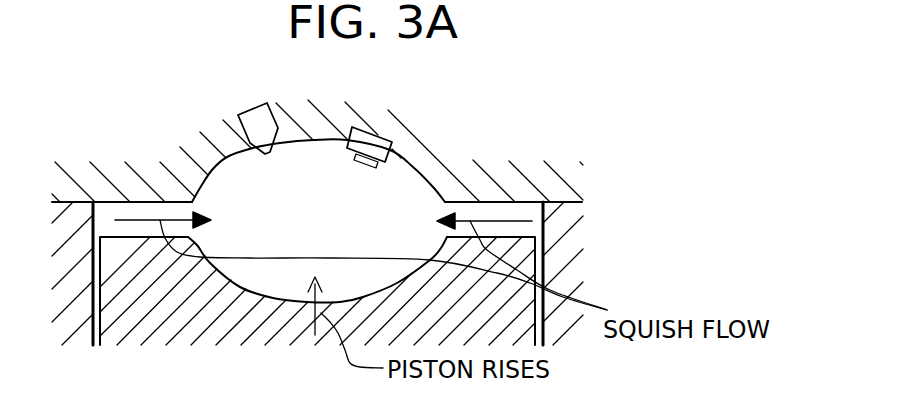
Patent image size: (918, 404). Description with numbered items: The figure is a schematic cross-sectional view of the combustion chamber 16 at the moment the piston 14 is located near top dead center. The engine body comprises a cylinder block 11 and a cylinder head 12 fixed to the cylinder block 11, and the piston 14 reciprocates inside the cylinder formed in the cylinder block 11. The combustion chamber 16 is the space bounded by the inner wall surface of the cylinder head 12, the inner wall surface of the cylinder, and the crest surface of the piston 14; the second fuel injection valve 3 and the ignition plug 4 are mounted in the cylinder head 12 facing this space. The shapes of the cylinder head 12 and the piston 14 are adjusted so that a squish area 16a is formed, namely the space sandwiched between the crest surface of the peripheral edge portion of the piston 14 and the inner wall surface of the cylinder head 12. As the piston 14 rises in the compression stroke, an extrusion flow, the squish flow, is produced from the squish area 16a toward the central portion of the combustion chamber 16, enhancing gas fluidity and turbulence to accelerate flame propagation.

The second fuel injection valve 3 is at (247, 113).
The ignition plug 4 is at (363, 125).
The cylinder block 11 is at (563, 252).
The cylinder head 12 is at (467, 176).
The piston 14 is at (138, 312).
The combustion chamber 16 is at (331, 226).
The squish area 16a is at (138, 213).